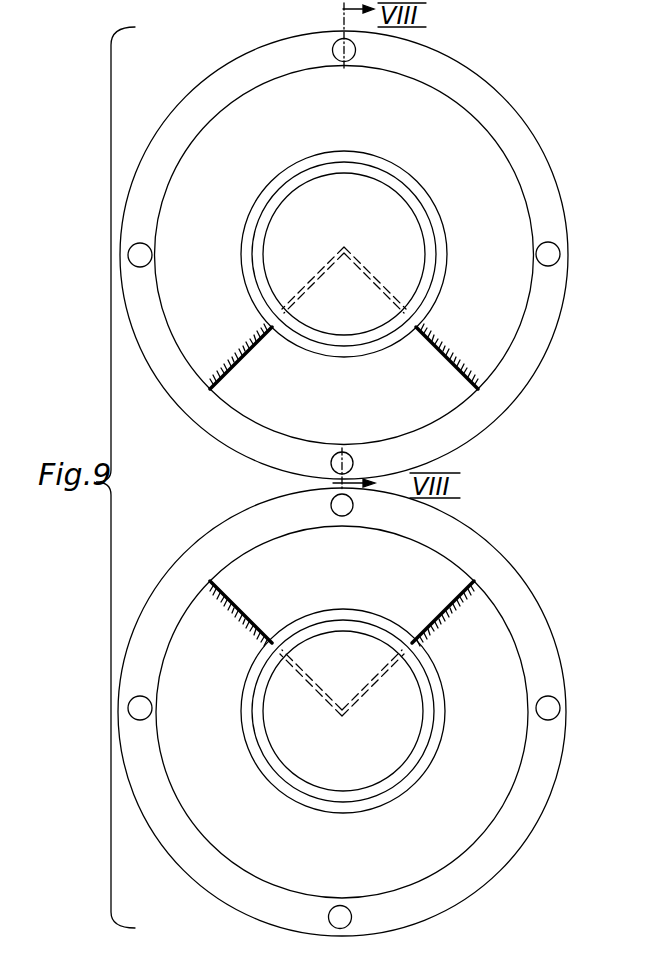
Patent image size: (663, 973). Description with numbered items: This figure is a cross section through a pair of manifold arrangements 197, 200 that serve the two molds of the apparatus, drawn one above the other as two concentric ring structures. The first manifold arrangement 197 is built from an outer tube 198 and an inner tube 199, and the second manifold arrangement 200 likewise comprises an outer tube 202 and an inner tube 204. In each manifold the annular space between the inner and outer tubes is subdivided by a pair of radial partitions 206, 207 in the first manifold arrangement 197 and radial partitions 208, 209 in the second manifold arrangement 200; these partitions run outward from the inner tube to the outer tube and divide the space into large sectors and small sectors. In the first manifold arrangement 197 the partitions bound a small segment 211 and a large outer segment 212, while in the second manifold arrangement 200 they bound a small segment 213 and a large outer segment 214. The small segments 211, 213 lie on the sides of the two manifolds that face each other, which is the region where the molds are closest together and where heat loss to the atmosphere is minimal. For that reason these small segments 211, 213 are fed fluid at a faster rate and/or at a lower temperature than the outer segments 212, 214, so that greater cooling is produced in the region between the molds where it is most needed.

The manifold arrangement 197 is at (352, 712).
The outer tube 198 is at (497, 870).
The inner tube 199 is at (420, 762).
The manifold arrangement 200 is at (350, 255).
The outer tube 202 is at (497, 92).
The inner tube 204 is at (427, 212).
The radial partition 206 is at (243, 604).
The radial partition 207 is at (447, 616).
The radial partition 208 is at (236, 366).
The radial partition 209 is at (450, 346).
The small segment 211 is at (359, 579).
The outer segment 212 is at (355, 862).
The small segment 213 is at (361, 398).
The outer segment 214 is at (357, 123).